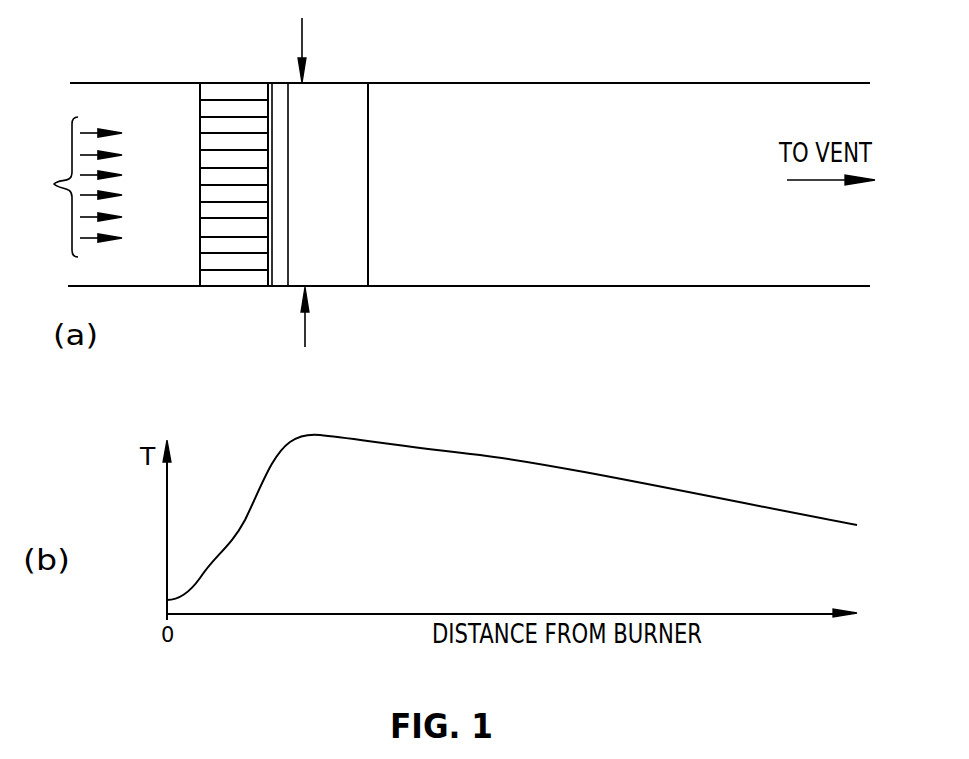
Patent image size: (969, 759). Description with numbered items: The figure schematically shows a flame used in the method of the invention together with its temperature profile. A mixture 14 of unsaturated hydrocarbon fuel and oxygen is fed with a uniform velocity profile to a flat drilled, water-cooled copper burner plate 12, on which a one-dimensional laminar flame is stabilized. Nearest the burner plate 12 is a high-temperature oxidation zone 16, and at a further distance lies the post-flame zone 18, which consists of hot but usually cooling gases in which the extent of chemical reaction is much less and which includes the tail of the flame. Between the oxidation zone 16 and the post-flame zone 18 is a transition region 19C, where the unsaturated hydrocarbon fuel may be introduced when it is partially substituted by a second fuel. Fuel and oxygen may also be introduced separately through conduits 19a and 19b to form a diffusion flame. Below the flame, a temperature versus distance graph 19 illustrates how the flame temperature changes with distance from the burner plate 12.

The burner plate 12 is at (238, 90).
The mixture 14 is at (75, 187).
The oxidation zone 16 is at (330, 136).
The post-flame zone 18 is at (583, 113).
The temperature v. distance graph 19 is at (132, 545).
The conduit 19a is at (305, 333).
The conduit 19b is at (302, 40).
The transition region 19C is at (368, 82).